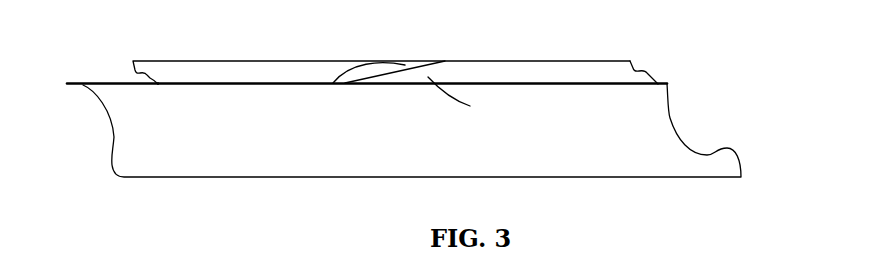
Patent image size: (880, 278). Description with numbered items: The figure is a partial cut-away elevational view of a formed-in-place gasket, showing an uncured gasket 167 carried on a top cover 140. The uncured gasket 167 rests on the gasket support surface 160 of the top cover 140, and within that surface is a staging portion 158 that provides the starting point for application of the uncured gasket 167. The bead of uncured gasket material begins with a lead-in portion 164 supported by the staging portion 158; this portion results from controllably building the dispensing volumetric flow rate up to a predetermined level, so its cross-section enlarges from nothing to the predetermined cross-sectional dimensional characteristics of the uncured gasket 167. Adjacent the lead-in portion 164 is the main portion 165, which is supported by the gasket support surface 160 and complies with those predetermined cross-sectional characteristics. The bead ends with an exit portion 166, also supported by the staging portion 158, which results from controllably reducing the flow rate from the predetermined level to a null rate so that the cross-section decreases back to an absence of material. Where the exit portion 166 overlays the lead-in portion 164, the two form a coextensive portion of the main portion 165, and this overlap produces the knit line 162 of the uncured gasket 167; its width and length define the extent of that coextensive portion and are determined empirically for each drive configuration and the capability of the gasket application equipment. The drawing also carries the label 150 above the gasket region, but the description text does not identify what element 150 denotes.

The top cover 140 is at (637, 110).
The layer 150 is at (286, 28).
The staging portion 158 is at (425, 85).
The gasket support surface 160 is at (117, 84).
The knit line 162 is at (410, 69).
The lead-in portion 164 is at (470, 106).
The main portion 165 is at (648, 70).
The exit portion 166 is at (333, 83).
The uncured gasket 167 is at (524, 58).